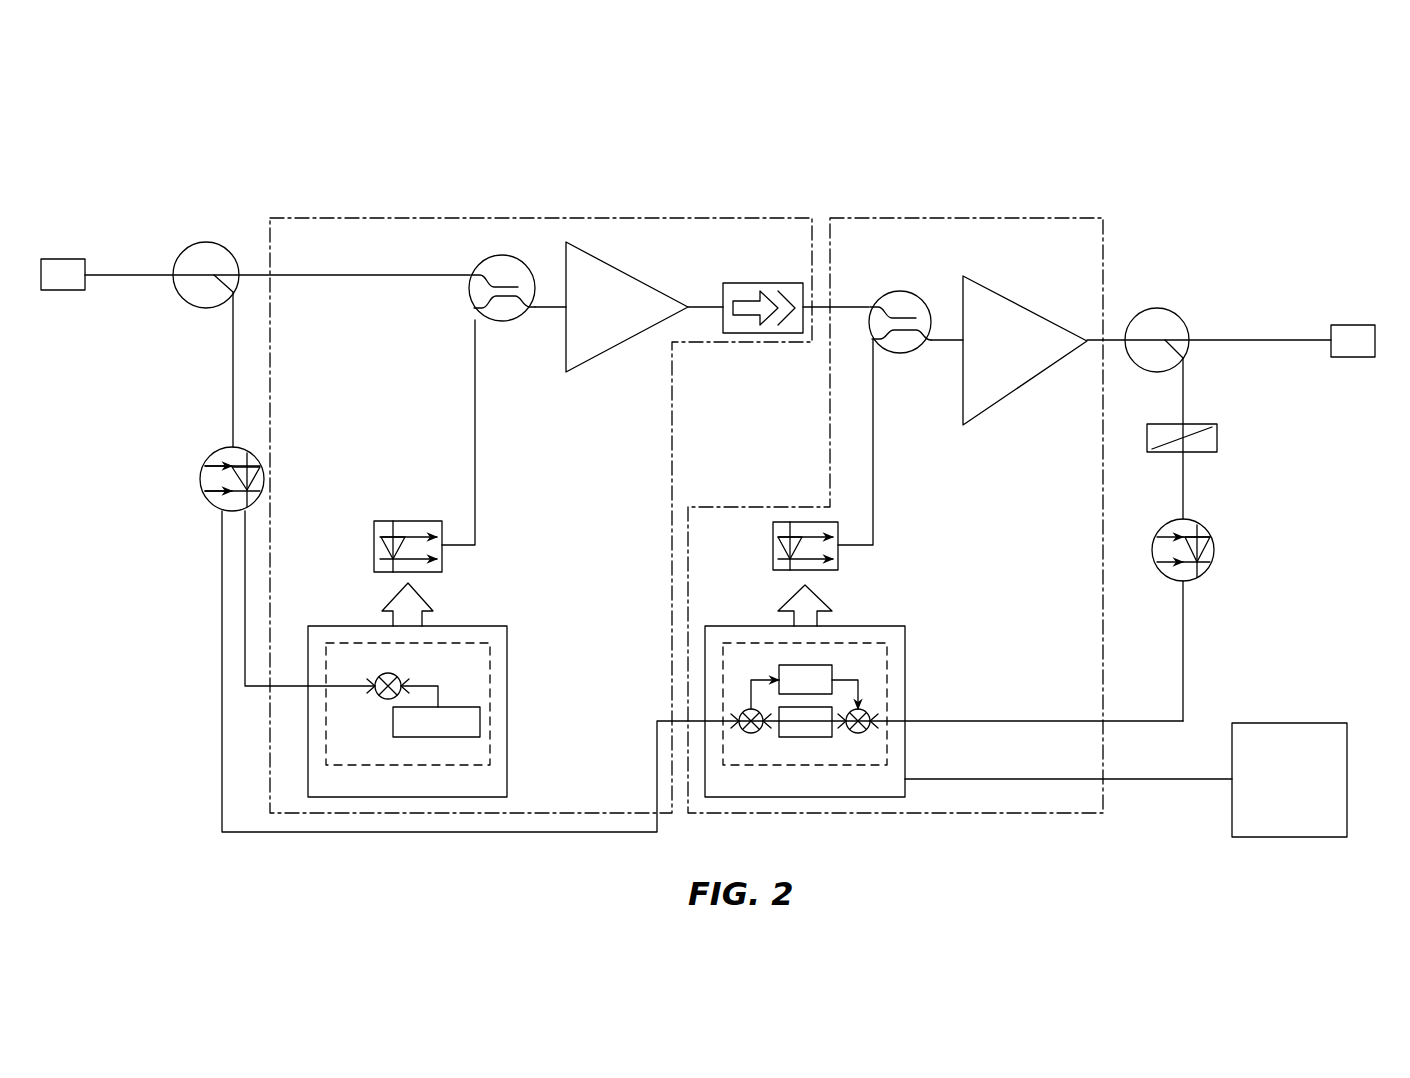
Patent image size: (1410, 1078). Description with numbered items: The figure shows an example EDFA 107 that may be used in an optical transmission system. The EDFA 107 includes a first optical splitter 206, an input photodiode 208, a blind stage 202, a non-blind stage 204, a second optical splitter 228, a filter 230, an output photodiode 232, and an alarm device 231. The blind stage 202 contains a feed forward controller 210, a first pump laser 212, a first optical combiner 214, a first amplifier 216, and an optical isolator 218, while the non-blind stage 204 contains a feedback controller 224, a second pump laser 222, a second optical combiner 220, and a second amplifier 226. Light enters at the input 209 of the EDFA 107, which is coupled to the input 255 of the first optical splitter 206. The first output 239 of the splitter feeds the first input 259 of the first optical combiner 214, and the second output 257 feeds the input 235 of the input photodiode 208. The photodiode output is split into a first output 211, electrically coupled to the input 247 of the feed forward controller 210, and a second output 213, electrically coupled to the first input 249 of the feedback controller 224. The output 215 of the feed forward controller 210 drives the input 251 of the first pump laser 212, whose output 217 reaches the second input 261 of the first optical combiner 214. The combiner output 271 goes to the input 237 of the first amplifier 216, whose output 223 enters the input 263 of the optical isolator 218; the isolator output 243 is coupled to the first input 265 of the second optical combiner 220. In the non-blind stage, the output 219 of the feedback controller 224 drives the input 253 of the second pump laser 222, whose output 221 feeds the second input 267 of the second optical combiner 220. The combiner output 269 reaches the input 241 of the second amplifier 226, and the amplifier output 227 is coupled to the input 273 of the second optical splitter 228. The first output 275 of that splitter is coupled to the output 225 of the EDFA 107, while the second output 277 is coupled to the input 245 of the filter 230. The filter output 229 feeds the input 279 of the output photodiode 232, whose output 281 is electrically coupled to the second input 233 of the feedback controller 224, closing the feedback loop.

The EDFA 107 is at (93, 131).
The blind stage 202 is at (757, 218).
The non-blind stage 204 is at (1048, 218).
The first optical splitter 206 is at (195, 250).
The input photodiode 208 is at (207, 458).
The input 209 is at (62, 259).
The feed forward controller 210 is at (507, 690).
The first output 211 is at (249, 507).
The first pump laser 212 is at (374, 540).
The second output 213 is at (217, 507).
The first optical combiner 214 is at (513, 257).
The output 215 is at (390, 622).
The first amplifier 216 is at (627, 307).
The output 217 is at (446, 543).
The optical isolator 218 is at (760, 283).
The output 219 is at (826, 620).
The second optical combiner 220 is at (893, 290).
The output 221 is at (842, 541).
The second pump laser 222 is at (773, 547).
The output 223 is at (700, 312).
The feedback controller 224 is at (755, 626).
The output 225 is at (1352, 325).
The second amplifier 226 is at (1025, 350).
The output 227 is at (1084, 334).
The second optical splitter 228 is at (1155, 309).
The output 229 is at (1189, 456).
The filter 230 is at (1170, 424).
The alarm device 231 is at (1289, 780).
The output photodiode 232 is at (1167, 524).
The second input 233 is at (910, 718).
The input 235 is at (240, 440).
The input 237 is at (559, 308).
The first output 239 is at (246, 268).
The input 241 is at (959, 334).
The output 243 is at (808, 312).
The input 245 is at (1189, 418).
The input 247 is at (308, 700).
The first input 249 is at (700, 718).
The input 251 is at (415, 580).
The input 253 is at (812, 580).
The input 255 is at (172, 282).
The second output 257 is at (241, 299).
The first input 259 is at (469, 270).
The second input 261 is at (471, 301).
The input 263 is at (715, 299).
The first input 265 is at (865, 303).
The second input 267 is at (871, 338).
The output 269 is at (928, 347).
The output 271 is at (530, 313).
The input 273 is at (1095, 347).
The first output 275 is at (1190, 330).
The second output 277 is at (1191, 356).
The input 279 is at (1189, 508).
The output 281 is at (1189, 587).